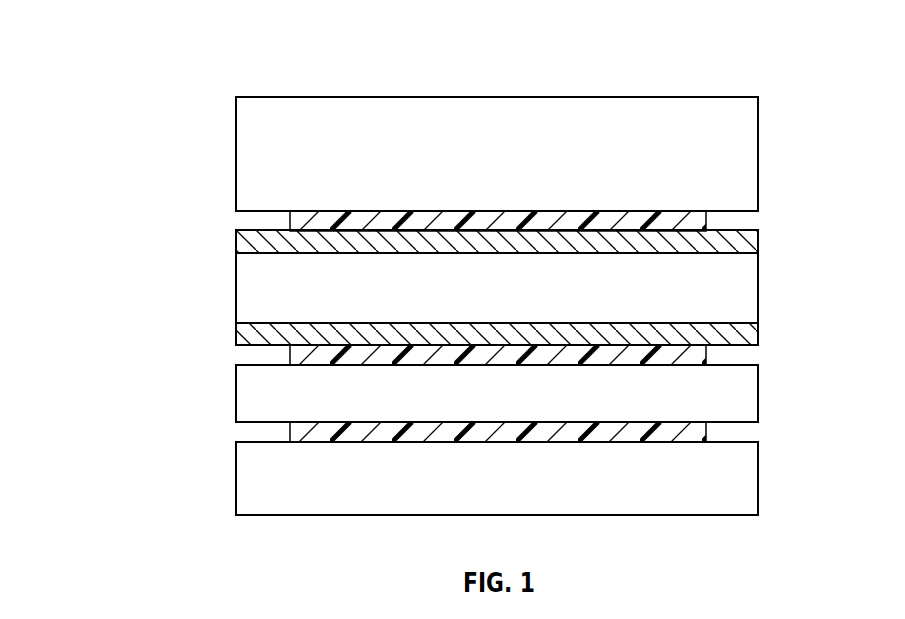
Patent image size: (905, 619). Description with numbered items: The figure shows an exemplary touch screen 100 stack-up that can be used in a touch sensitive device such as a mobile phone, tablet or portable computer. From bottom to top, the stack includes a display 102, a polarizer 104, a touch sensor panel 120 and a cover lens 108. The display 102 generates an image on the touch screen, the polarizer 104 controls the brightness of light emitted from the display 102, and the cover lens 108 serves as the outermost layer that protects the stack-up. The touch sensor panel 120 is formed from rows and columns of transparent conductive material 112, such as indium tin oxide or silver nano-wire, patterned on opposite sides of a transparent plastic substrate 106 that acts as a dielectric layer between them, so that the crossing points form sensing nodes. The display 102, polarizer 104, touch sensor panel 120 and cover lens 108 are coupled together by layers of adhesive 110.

The touch screen 100 is at (117, 35).
The display 102 is at (758, 479).
The polarizer 104 is at (236, 393).
The transparent plastic substrate 106 is at (758, 289).
The cover lens 108 is at (758, 153).
The adhesive 110 is at (707, 221).
The transparent conductive material 112 is at (236, 238).
The touch sensor panel 120 is at (439, 309).